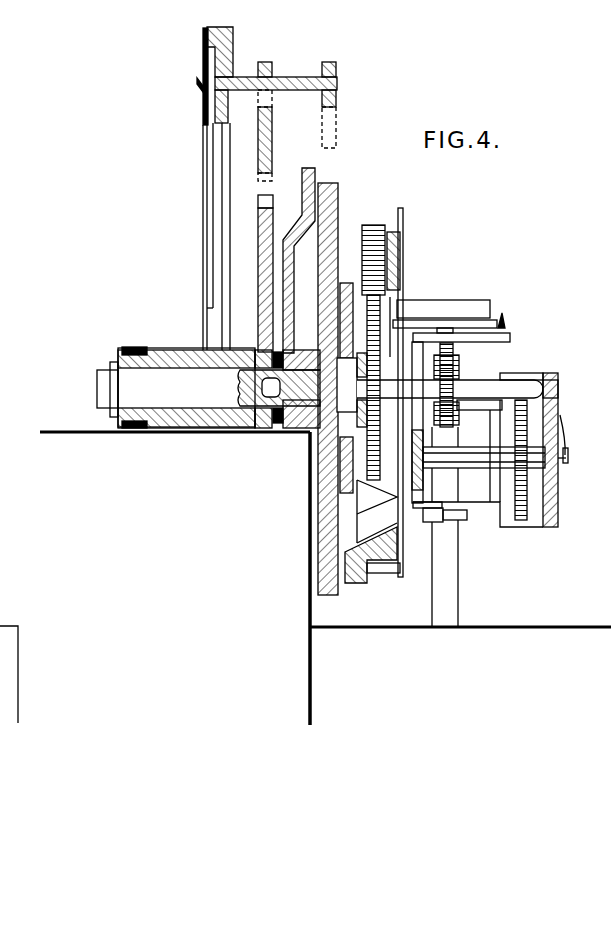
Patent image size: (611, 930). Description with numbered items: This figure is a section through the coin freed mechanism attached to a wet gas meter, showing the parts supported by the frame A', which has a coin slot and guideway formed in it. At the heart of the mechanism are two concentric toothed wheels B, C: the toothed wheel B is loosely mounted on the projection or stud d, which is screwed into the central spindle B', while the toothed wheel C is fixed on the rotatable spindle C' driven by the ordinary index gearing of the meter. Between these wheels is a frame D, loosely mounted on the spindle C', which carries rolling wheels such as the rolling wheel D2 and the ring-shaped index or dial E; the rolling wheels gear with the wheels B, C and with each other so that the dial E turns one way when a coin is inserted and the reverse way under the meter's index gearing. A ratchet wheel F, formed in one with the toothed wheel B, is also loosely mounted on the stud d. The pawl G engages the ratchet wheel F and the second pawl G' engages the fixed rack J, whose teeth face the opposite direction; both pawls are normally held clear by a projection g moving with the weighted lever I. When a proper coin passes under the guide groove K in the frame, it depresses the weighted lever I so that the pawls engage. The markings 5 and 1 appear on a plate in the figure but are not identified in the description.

The frame A' is at (240, 43).
The guide groove K is at (213, 108).
The weighted lever I is at (228, 108).
The projection g is at (299, 77).
The second pawl G' is at (256, 115).
The pawl G is at (346, 101).
The fixed rack J is at (258, 223).
The ratchet wheel F is at (337, 198).
The central spindle B' is at (208, 387).
The stud d is at (307, 424).
The toothed wheel B is at (314, 390).
The rotatable spindle C' is at (447, 390).
The rolling wheel D2 is at (378, 214).
The toothed wheel C is at (412, 379).
The frame D is at (402, 262).
The index dial E is at (408, 545).
The scale mark 5 is at (443, 310).
The scale mark 1 is at (483, 314).